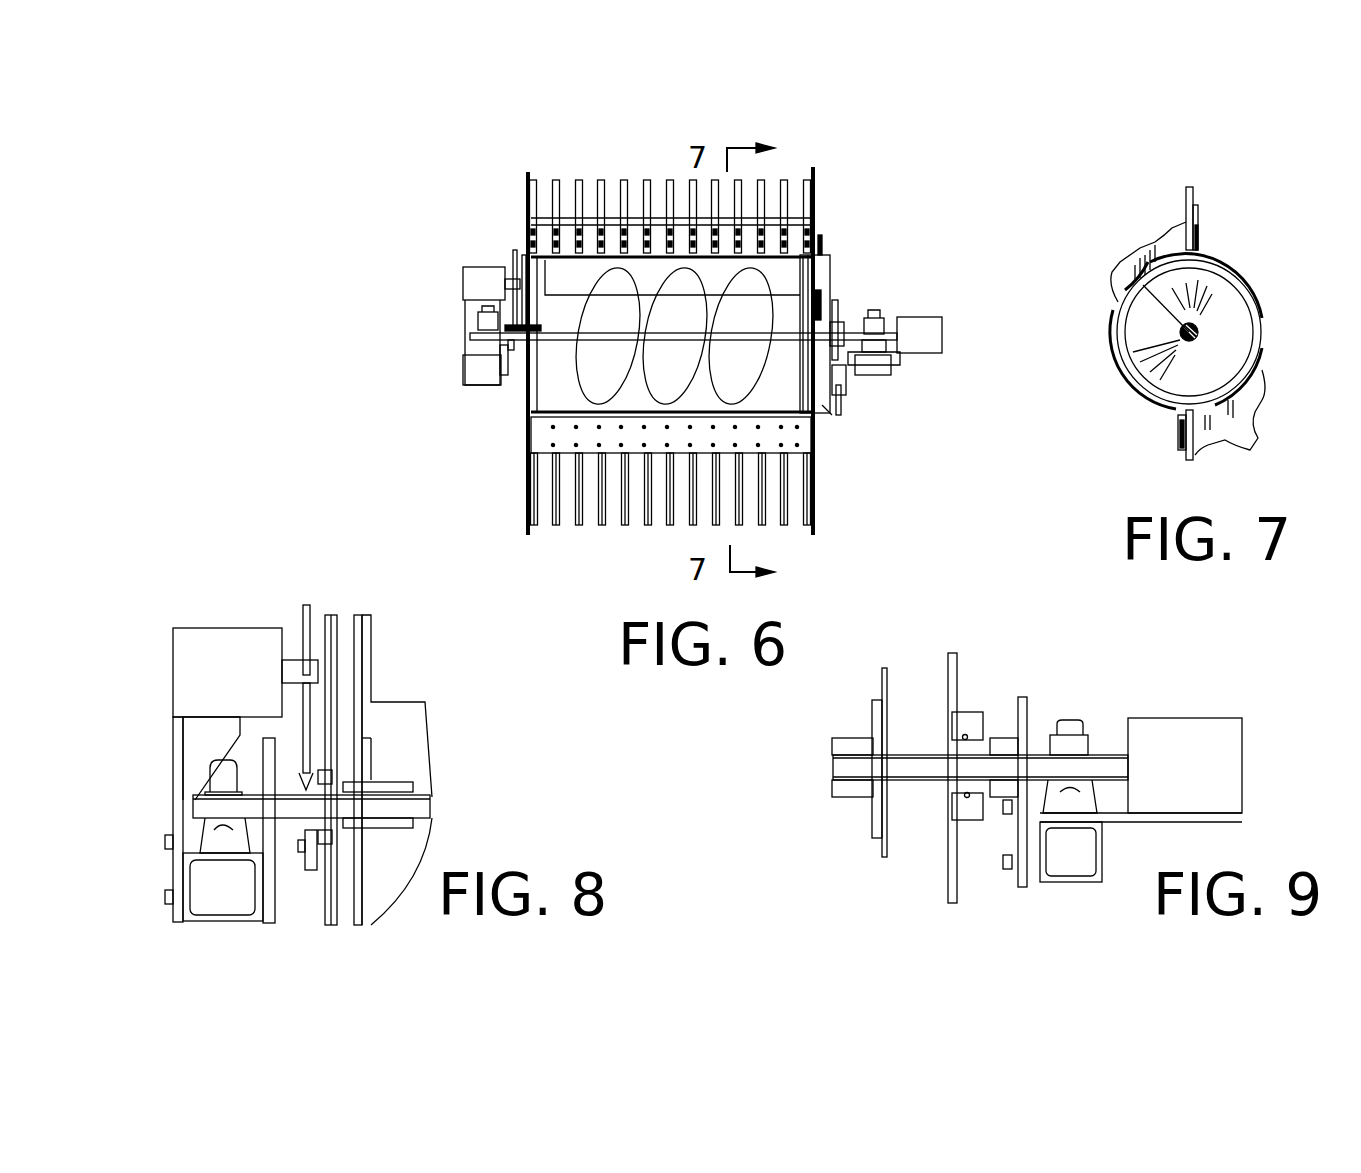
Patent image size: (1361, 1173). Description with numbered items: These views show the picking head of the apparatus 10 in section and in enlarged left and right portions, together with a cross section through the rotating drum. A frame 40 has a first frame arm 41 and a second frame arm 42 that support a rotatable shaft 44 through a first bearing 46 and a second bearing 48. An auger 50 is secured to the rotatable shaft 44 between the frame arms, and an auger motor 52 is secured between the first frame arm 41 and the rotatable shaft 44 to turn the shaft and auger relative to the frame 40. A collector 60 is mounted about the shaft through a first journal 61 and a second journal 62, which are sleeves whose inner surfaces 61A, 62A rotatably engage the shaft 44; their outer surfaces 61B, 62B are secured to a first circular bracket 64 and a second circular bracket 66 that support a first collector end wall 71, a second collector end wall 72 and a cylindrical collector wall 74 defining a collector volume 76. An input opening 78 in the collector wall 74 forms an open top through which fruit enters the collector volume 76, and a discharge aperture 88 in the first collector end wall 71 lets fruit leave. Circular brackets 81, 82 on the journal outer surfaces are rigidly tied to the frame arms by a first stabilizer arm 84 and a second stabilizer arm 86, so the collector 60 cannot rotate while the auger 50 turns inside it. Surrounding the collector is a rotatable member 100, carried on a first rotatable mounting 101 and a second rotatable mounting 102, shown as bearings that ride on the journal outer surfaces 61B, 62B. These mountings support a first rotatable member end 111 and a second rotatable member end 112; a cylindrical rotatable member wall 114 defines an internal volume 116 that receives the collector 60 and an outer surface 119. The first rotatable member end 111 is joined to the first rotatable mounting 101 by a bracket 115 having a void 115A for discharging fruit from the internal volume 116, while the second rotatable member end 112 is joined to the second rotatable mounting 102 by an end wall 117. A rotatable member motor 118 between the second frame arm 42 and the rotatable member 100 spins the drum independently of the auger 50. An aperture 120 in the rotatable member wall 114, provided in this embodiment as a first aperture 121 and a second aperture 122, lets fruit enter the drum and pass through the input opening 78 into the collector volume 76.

In FIG. 6, the apparatus 10 is at (480, 148).
In FIG. 7, the apparatus 10 is at (1138, 172).
In FIG. 8, the apparatus 10 is at (400, 615).
In FIG. 9, the apparatus 10 is at (1198, 640).
In FIG. 6, the frame 40 is at (905, 360).
In FIG. 6, the first frame arm 41 is at (866, 372).
In FIG. 9, the first frame arm 41 is at (1065, 855).
In FIG. 6, the second frame arm 42 is at (480, 372).
In FIG. 8, the second frame arm 42 is at (183, 915).
In FIG. 6, the rotatable shaft 44 is at (762, 352).
In FIG. 7, the rotatable shaft 44 is at (1175, 340).
In FIG. 8, the rotatable shaft 44 is at (432, 803).
In FIG. 9, the rotatable shaft 44 is at (838, 768).
In FIG. 6, the first bearing 46 is at (875, 320).
In FIG. 9, the first bearing 46 is at (1085, 798).
In FIG. 6, the second bearing 48 is at (476, 335).
In FIG. 8, the second bearing 48 is at (200, 830).
In FIG. 6, the auger 50 is at (805, 270).
In FIG. 7, the auger 50 is at (1150, 308).
In FIG. 6, the auger motor 52 is at (942, 337).
In FIG. 9, the auger motor 52 is at (1243, 728).
In FIG. 6, the collector 60 is at (560, 395).
In FIG. 7, the collector 60 is at (1115, 375).
In FIG. 8, the collector 60 is at (372, 658).
In FIG. 9, the collector 60 is at (884, 668).
In FIG. 6, the first journal 61 is at (835, 278).
In FIG. 9, the first journal 61 is at (872, 705).
In FIG. 9, the inner surface of first journal 61A is at (835, 792).
In FIG. 9, the outer surface of first journal 61B is at (845, 738).
In FIG. 6, the second journal 62 is at (520, 385).
In FIG. 8, the second journal 62 is at (395, 782).
In FIG. 8, the inner surface of second journal 62A is at (415, 822).
In FIG. 8, the outer surface of second journal 62B is at (410, 785).
In FIG. 9, the first circular bracket 64 is at (875, 700).
In FIG. 8, the second circular bracket 66 is at (373, 740).
In FIG. 6, the first collector end wall 71 is at (822, 238).
In FIG. 9, the first collector end wall 71 is at (886, 670).
In FIG. 6, the second collector end wall 72 is at (520, 265).
In FIG. 8, the second collector end wall 72 is at (333, 615).
In FIG. 6, the collector wall 74 is at (688, 400).
In FIG. 8, the collector wall 74 is at (393, 866).
In FIG. 6, the collector volume 76 is at (816, 455).
In FIG. 7, the collector volume 76 is at (1163, 422).
In FIG. 6, the input opening 78 is at (568, 278).
In FIG. 7, the input opening 78 is at (1168, 250).
In FIG. 8, the input opening 78 is at (360, 615).
In FIG. 9, the circular bracket 81 is at (1027, 700).
In FIG. 8, the circular bracket 82 is at (285, 748).
In FIG. 9, the first stabilizer arm 84 is at (1018, 880).
In FIG. 8, the second stabilizer arm 86 is at (268, 923).
In FIG. 6, the discharge aperture 88 is at (830, 412).
In FIG. 6, the rotatable member 100 is at (817, 262).
In FIG. 7, the rotatable member 100 is at (1228, 262).
In FIG. 8, the rotatable member 100 is at (330, 925).
In FIG. 6, the first rotatable mounting 101 is at (838, 392).
In FIG. 9, the first rotatable mounting 101 is at (978, 715).
In FIG. 6, the second rotatable mounting 102 is at (505, 372).
In FIG. 8, the second rotatable mounting 102 is at (315, 870).
In FIG. 6, the first rotatable member end 111 is at (845, 272).
In FIG. 6, the second rotatable member end 112 is at (518, 398).
In FIG. 8, the second rotatable member end 112 is at (330, 612).
In FIG. 6, the rotatable member wall 114 is at (588, 405).
In FIG. 7, the rotatable member wall 114 is at (1148, 405).
In FIG. 6, the bracket 115 is at (843, 400).
In FIG. 9, the bracket 115 is at (958, 660).
In FIG. 6, the void 115A is at (825, 470).
In FIG. 6, the internal volume 116 is at (665, 272).
In FIG. 8, the end wall 117 is at (307, 605).
In FIG. 6, the rotatable member motor 118 is at (468, 268).
In FIG. 8, the rotatable member motor 118 is at (170, 630).
In FIG. 6, the outer surface 119 is at (816, 197).
In FIG. 7, the outer surface 119 is at (1262, 342).
In FIG. 7, the aperture 120 is at (1160, 222).
In FIG. 7, the first aperture 121 is at (1125, 268).
In FIG. 7, the second aperture 122 is at (1240, 435).